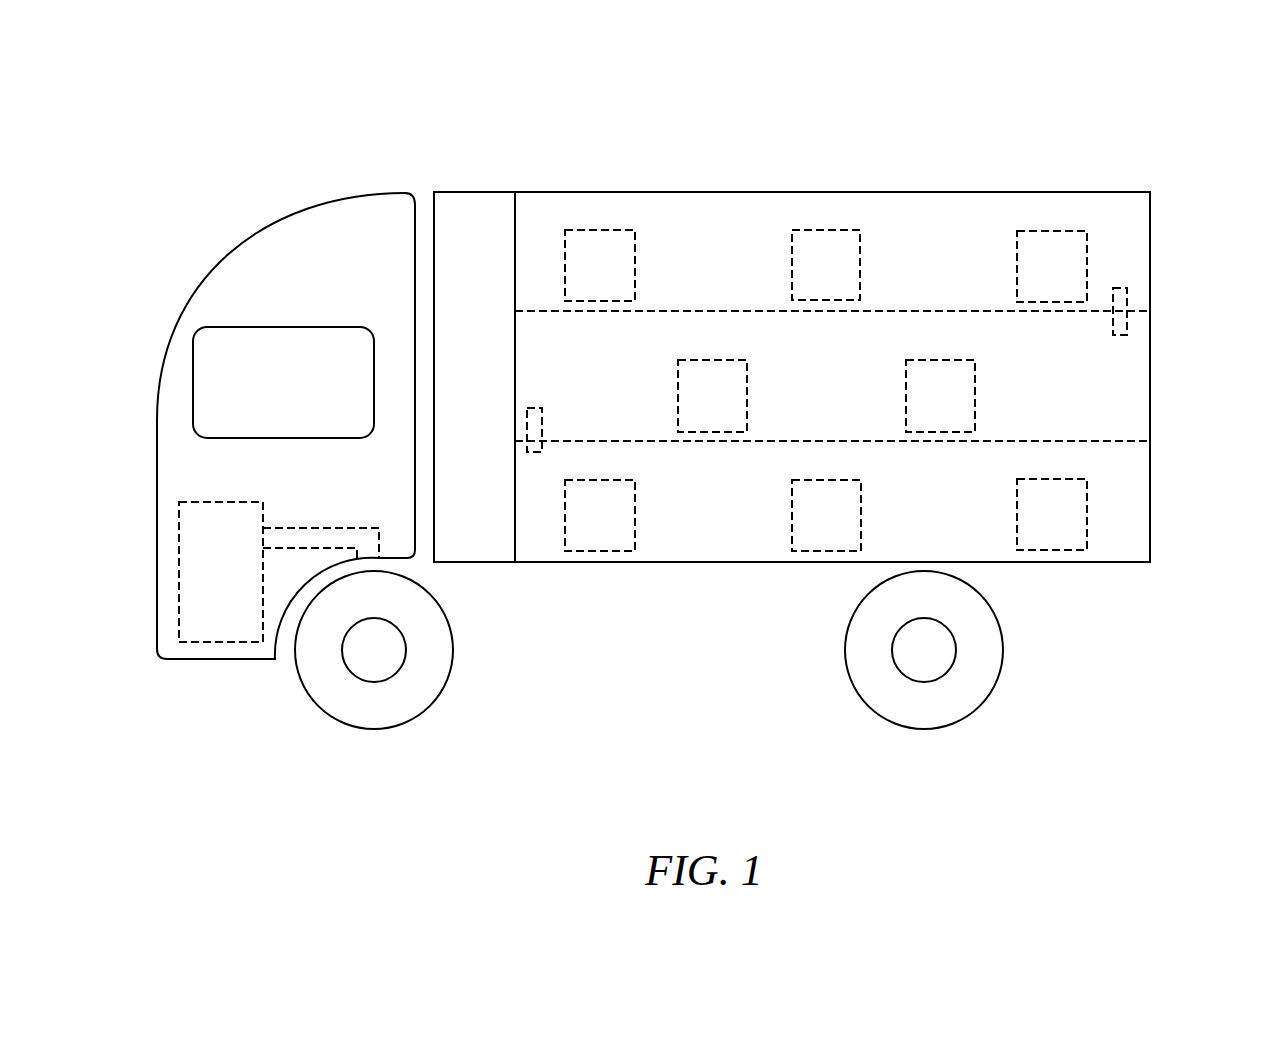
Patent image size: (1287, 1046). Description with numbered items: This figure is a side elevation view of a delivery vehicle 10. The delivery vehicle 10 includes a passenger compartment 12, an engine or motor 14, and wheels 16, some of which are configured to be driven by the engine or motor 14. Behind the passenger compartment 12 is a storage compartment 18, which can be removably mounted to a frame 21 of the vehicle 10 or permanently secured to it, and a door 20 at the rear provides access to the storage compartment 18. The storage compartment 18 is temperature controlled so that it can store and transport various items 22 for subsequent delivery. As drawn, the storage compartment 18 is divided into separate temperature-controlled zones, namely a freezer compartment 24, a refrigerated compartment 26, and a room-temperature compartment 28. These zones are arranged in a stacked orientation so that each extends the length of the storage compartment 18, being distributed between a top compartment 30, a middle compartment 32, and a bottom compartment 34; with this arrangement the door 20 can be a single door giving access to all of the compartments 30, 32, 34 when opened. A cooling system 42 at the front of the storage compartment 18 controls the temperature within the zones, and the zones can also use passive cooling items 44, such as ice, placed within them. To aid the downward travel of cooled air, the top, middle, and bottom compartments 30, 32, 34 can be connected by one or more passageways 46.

The delivery vehicle 10 is at (1180, 140).
The passenger compartment 12 is at (278, 291).
The engine or motor 14 is at (222, 642).
The wheels 16 is at (405, 722).
The storage compartment 18 is at (991, 192).
The door 20 is at (1150, 562).
The frame 21 is at (1018, 562).
The items 22 is at (605, 230).
The freezer compartment 24 is at (1117, 258).
The refrigerated compartment 26 is at (1100, 395).
The room-temperature compartment 28 is at (1121, 490).
The top compartment 30 is at (551, 222).
The middle compartment 32 is at (534, 363).
The bottom compartment 34 is at (543, 539).
The cooling system 42 is at (466, 223).
The passive cooling items 44 is at (825, 230).
The passageways 46 is at (527, 452).